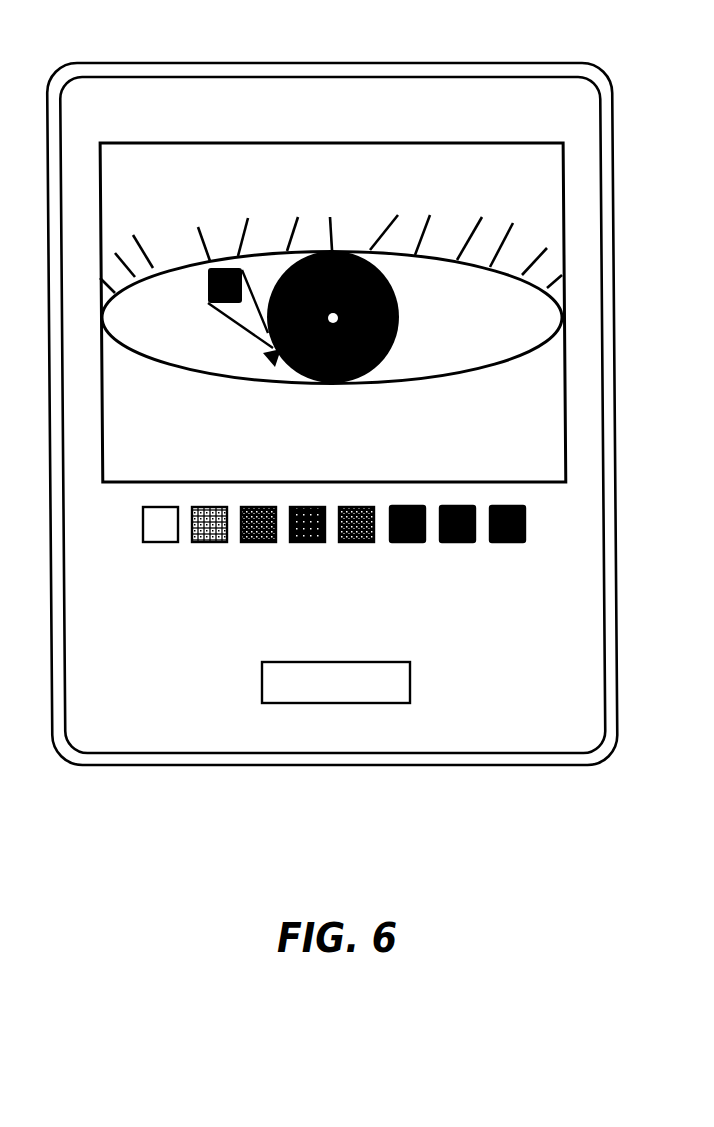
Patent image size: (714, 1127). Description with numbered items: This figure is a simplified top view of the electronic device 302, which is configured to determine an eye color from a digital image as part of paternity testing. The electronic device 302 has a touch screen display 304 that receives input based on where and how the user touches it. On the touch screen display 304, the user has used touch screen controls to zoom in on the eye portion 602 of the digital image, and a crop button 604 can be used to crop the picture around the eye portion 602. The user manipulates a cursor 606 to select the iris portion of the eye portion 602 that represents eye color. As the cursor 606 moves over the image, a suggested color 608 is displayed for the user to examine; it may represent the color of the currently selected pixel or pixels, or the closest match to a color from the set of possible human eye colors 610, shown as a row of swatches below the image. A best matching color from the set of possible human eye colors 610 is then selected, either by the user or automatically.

The electronic device 302 is at (203, 68).
The touch screen display 304 is at (453, 107).
The eye portion 602 is at (183, 328).
The crop button 604 is at (293, 675).
The cursor 606 is at (270, 352).
The suggested color 608 is at (225, 268).
The set of possible human eye colors 610 is at (525, 541).